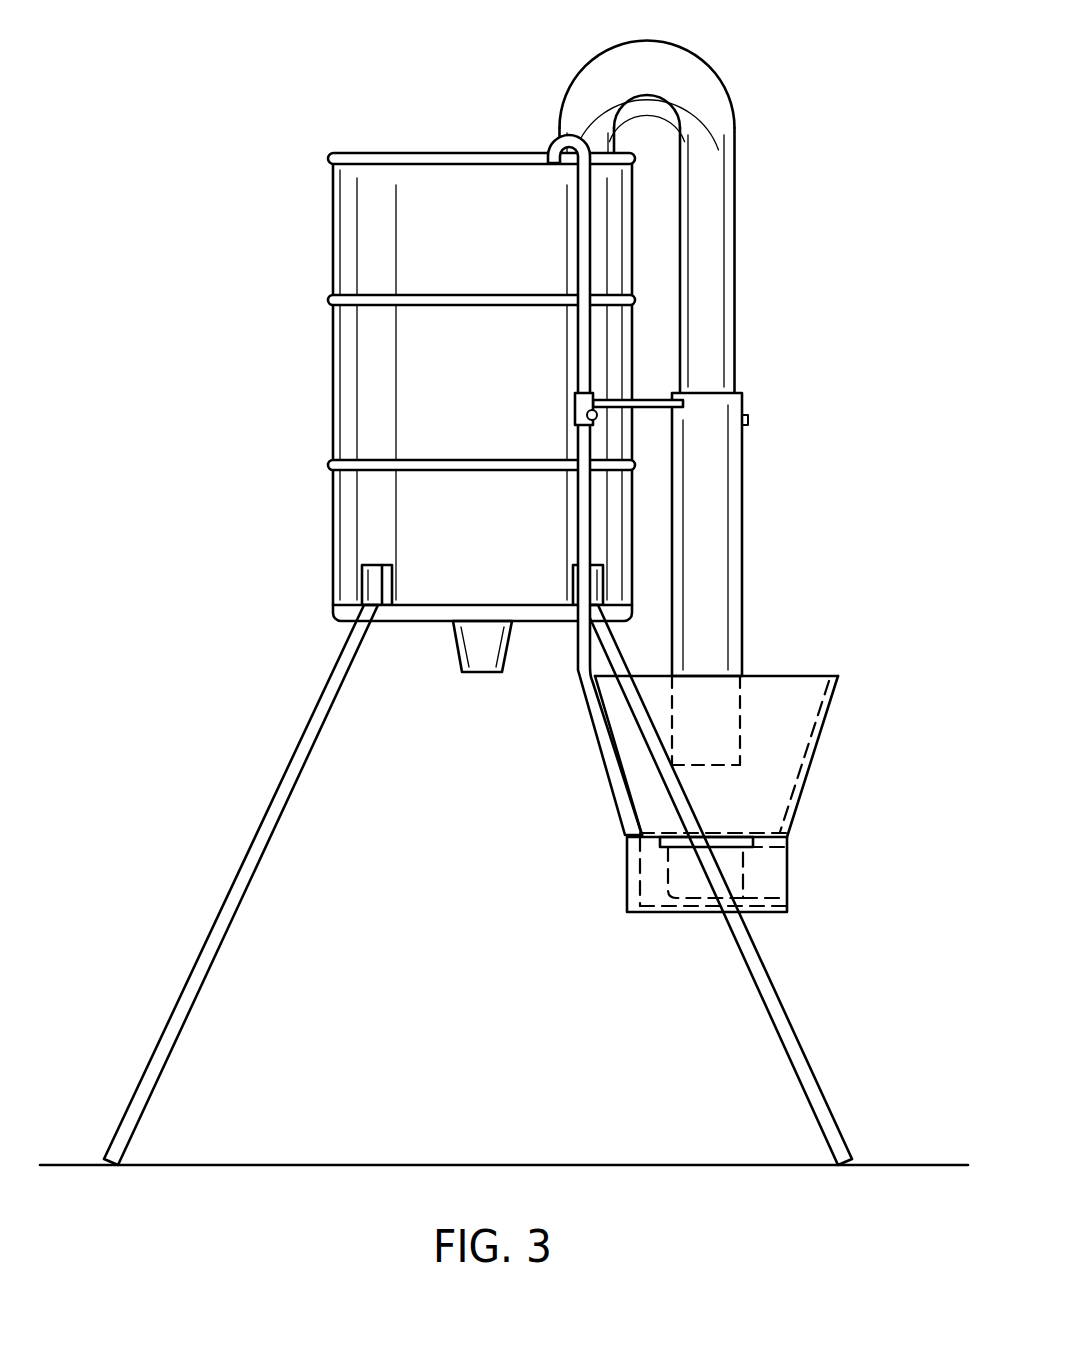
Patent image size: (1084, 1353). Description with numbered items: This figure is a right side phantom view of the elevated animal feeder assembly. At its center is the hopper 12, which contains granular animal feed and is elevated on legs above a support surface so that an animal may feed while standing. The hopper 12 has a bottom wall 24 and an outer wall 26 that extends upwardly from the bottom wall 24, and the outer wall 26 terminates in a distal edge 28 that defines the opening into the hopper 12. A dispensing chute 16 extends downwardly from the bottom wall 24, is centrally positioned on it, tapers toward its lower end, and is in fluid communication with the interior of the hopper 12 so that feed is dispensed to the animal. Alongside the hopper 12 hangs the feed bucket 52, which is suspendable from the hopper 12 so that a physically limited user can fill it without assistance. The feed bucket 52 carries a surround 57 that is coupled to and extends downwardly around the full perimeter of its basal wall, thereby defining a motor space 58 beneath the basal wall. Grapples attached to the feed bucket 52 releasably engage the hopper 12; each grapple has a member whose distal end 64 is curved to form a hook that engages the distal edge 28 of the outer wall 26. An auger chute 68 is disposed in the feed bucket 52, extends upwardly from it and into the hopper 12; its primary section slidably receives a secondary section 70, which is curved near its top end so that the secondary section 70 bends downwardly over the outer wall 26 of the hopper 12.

The hopper 12 is at (333, 211).
The distal edge 28 is at (435, 154).
The outer wall 26 is at (333, 401).
The bottom wall 24 is at (407, 621).
The dispensing chute 16 is at (507, 647).
The secondary section 70 is at (737, 148).
The auger chute 68 is at (706, 217).
The distal end 64 is at (740, 548).
The feed bucket 52 is at (872, 716).
The surround 57 is at (741, 939).
The motor space 58 is at (655, 902).